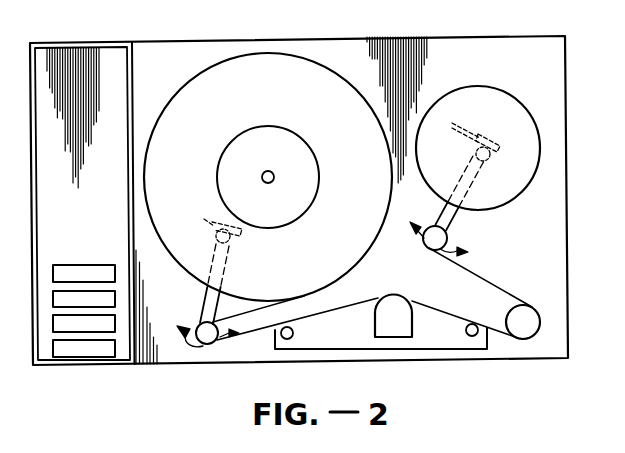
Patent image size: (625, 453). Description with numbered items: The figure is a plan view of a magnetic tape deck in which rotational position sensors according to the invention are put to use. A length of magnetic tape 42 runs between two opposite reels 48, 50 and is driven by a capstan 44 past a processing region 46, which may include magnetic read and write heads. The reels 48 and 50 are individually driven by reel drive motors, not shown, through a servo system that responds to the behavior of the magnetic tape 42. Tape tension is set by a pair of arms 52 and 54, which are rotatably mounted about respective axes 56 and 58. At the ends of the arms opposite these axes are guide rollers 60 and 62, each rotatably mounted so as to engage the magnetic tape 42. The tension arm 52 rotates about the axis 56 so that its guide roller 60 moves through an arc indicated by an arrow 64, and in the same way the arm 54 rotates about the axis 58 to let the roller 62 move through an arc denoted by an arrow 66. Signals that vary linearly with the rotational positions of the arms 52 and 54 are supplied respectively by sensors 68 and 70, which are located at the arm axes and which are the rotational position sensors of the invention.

The magnetic tape 42 is at (263, 334).
The capstan 44 is at (542, 322).
The processing region 46 is at (396, 331).
The reel 48 is at (289, 64).
The reel 50 is at (533, 141).
The tension arm 52 is at (209, 303).
The arm 54 is at (450, 210).
The axis 56 is at (233, 238).
The axis 58 is at (487, 153).
The guide roller 60 is at (299, 200).
The guide roller 62 is at (437, 250).
The arrow 64 is at (220, 343).
The arrow 66 is at (421, 239).
The sensor 68 is at (214, 227).
The sensor 70 is at (460, 128).